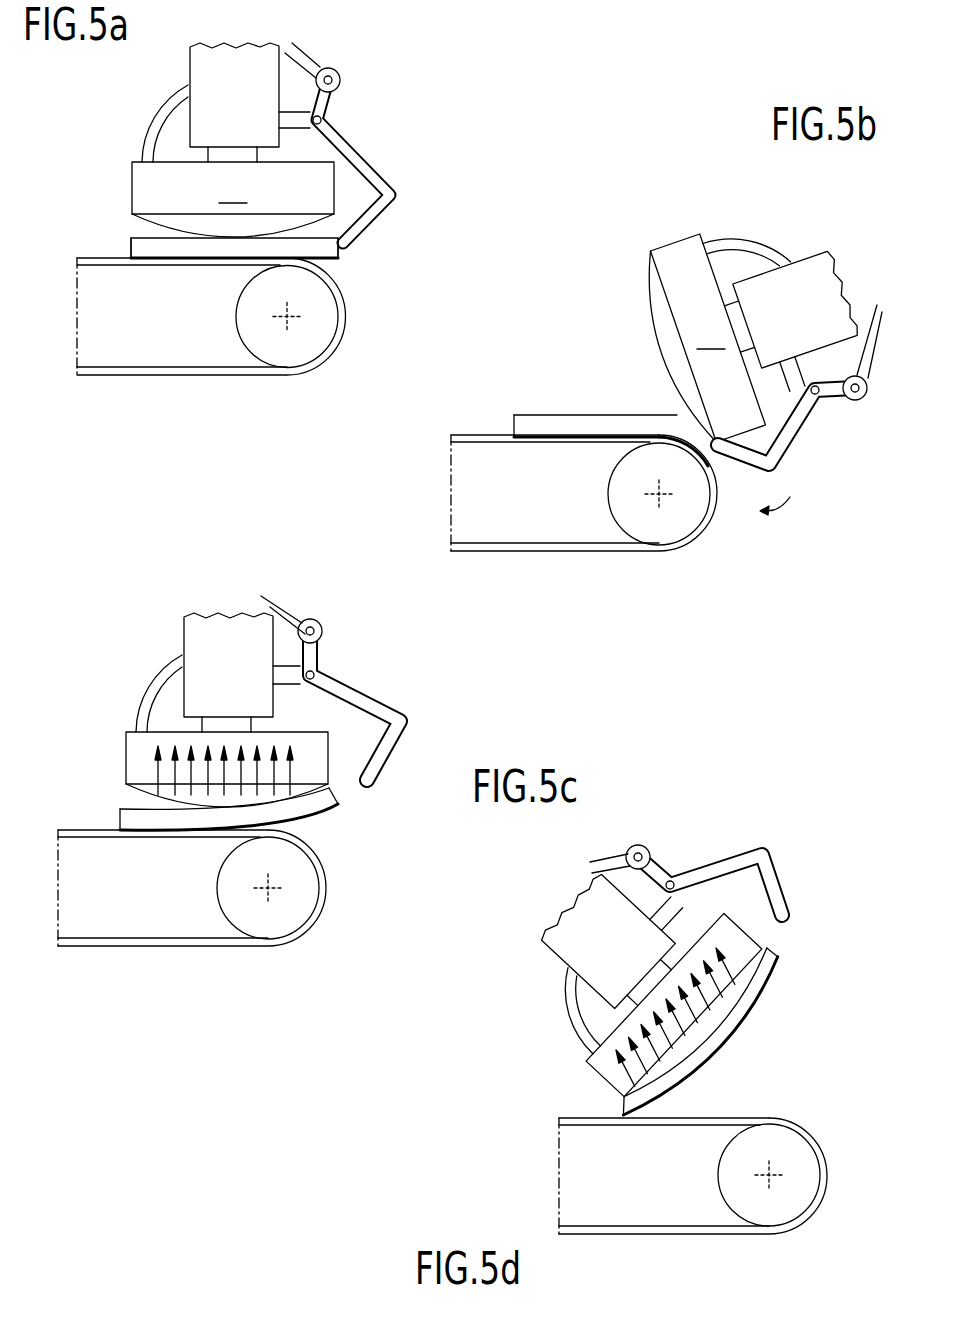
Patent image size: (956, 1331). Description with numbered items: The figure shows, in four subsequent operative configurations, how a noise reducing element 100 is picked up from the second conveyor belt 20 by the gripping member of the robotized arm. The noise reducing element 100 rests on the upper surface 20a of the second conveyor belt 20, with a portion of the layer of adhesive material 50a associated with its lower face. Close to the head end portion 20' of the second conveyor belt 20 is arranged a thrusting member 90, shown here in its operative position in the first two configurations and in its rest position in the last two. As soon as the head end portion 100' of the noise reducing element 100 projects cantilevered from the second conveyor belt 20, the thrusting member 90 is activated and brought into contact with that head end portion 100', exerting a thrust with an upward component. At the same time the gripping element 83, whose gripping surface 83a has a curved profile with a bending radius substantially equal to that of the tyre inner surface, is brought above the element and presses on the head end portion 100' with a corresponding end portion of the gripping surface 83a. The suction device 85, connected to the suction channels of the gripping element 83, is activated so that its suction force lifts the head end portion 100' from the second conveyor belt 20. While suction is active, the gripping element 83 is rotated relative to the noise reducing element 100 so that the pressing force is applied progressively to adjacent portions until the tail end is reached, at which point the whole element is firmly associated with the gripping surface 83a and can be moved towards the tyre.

In FIG. 5A, the second conveyor belt 20 is at (204, 353).
In FIG. 5B, the second conveyor belt 20 is at (584, 528).
In FIG. 5C, the second conveyor belt 20 is at (192, 888).
In FIG. 5D, the second conveyor belt 20 is at (688, 1210).
In FIG. 5A, the head end portion of the second conveyor belt 20' is at (293, 360).
In FIG. 5B, the head end portion of the second conveyor belt 20' is at (679, 537).
In FIG. 5C, the head end portion of the second conveyor belt 20' is at (272, 930).
In FIG. 5D, the head end portion of the second conveyor belt 20' is at (781, 1215).
In FIG. 5A, the upper surface of the second conveyor belt 20a is at (75, 243).
In FIG. 5B, the upper surface of the second conveyor belt 20a is at (467, 425).
In FIG. 5C, the upper surface of the second conveyor belt 20a is at (71, 824).
In FIG. 5D, the upper surface of the second conveyor belt 20a is at (777, 1107).
In FIG. 5A, the layer of adhesive material 50a is at (195, 260).
In FIG. 5B, the layer of adhesive material 50a is at (550, 437).
In FIG. 5C, the layer of adhesive material 50a is at (176, 832).
In FIG. 5D, the layer of adhesive material 50a is at (756, 1020).
In FIG. 5A, the gripping element 83 is at (233, 188).
In FIG. 5B, the gripping element 83 is at (708, 338).
In FIG. 5C, the gripping element 83 is at (313, 755).
In FIG. 5D, the gripping element 83 is at (610, 1066).
In FIG. 5A, the gripping surface 83a is at (233, 225).
In FIG. 5B, the gripping surface 83a is at (649, 292).
In FIG. 5C, the gripping surface 83a is at (125, 758).
In FIG. 5D, the gripping surface 83a is at (780, 954).
In FIG. 5A, the suction device 85 is at (160, 119).
In FIG. 5B, the suction device 85 is at (769, 237).
In FIG. 5C, the suction device 85 is at (171, 661).
In FIG. 5D, the suction device 85 is at (566, 1011).
In FIG. 5A, the thrusting member 90 is at (380, 122).
In FIG. 5B, the thrusting member 90 is at (820, 460).
In FIG. 5C, the thrusting member 90 is at (354, 673).
In FIG. 5D, the thrusting member 90 is at (733, 842).
In FIG. 5A, the noise reducing element 100 is at (234, 343).
In FIG. 5B, the noise reducing element 100 is at (595, 388).
In FIG. 5C, the noise reducing element 100 is at (255, 839).
In FIG. 5D, the noise reducing element 100 is at (719, 1036).
In FIG. 5A, the head end portion of the noise reducing element 100' is at (376, 230).
In FIG. 5B, the head end portion of the noise reducing element 100' is at (661, 406).
In FIG. 5C, the head end portion of the noise reducing element 100' is at (379, 814).
In FIG. 5D, the head end portion of the noise reducing element 100' is at (823, 970).